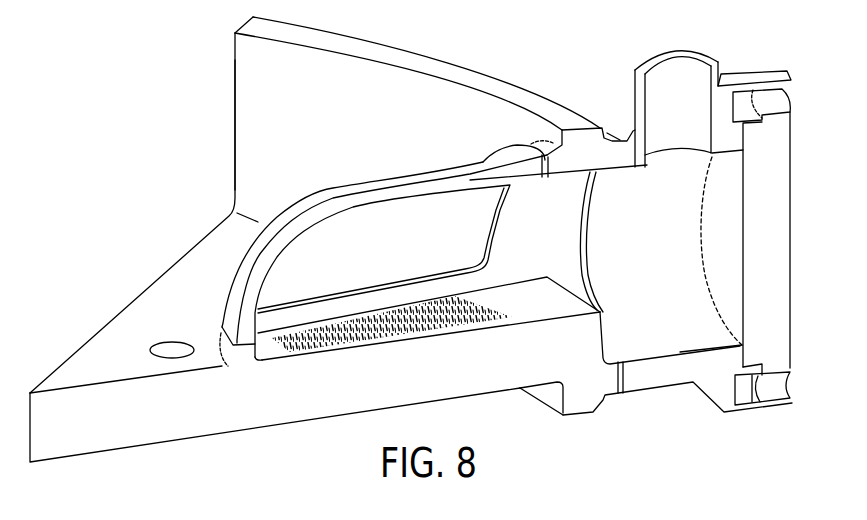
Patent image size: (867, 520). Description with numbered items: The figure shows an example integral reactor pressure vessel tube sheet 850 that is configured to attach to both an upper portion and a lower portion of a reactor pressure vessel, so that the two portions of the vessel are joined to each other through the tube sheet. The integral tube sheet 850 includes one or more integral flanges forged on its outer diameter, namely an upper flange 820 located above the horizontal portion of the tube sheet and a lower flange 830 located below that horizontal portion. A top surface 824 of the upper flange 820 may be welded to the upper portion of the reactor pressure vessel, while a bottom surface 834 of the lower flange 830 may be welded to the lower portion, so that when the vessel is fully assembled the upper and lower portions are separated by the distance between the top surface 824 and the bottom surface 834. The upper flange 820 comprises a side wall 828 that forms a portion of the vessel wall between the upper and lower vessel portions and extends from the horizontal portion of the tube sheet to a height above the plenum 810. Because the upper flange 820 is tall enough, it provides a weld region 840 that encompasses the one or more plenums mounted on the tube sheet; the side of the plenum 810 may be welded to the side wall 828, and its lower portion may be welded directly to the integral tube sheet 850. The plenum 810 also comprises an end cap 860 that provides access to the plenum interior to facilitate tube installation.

The plenum 810 is at (337, 186).
The upper flange 820 is at (408, 45).
The top surface 824 is at (235, 33).
The side wall 828 is at (235, 145).
The lower flange 830 is at (580, 415).
The bottom surface 834 is at (603, 415).
The weld region 840 is at (536, 170).
The integral reactor pressure vessel tube sheet 850 is at (255, 94).
The end cap 860 is at (774, 70).